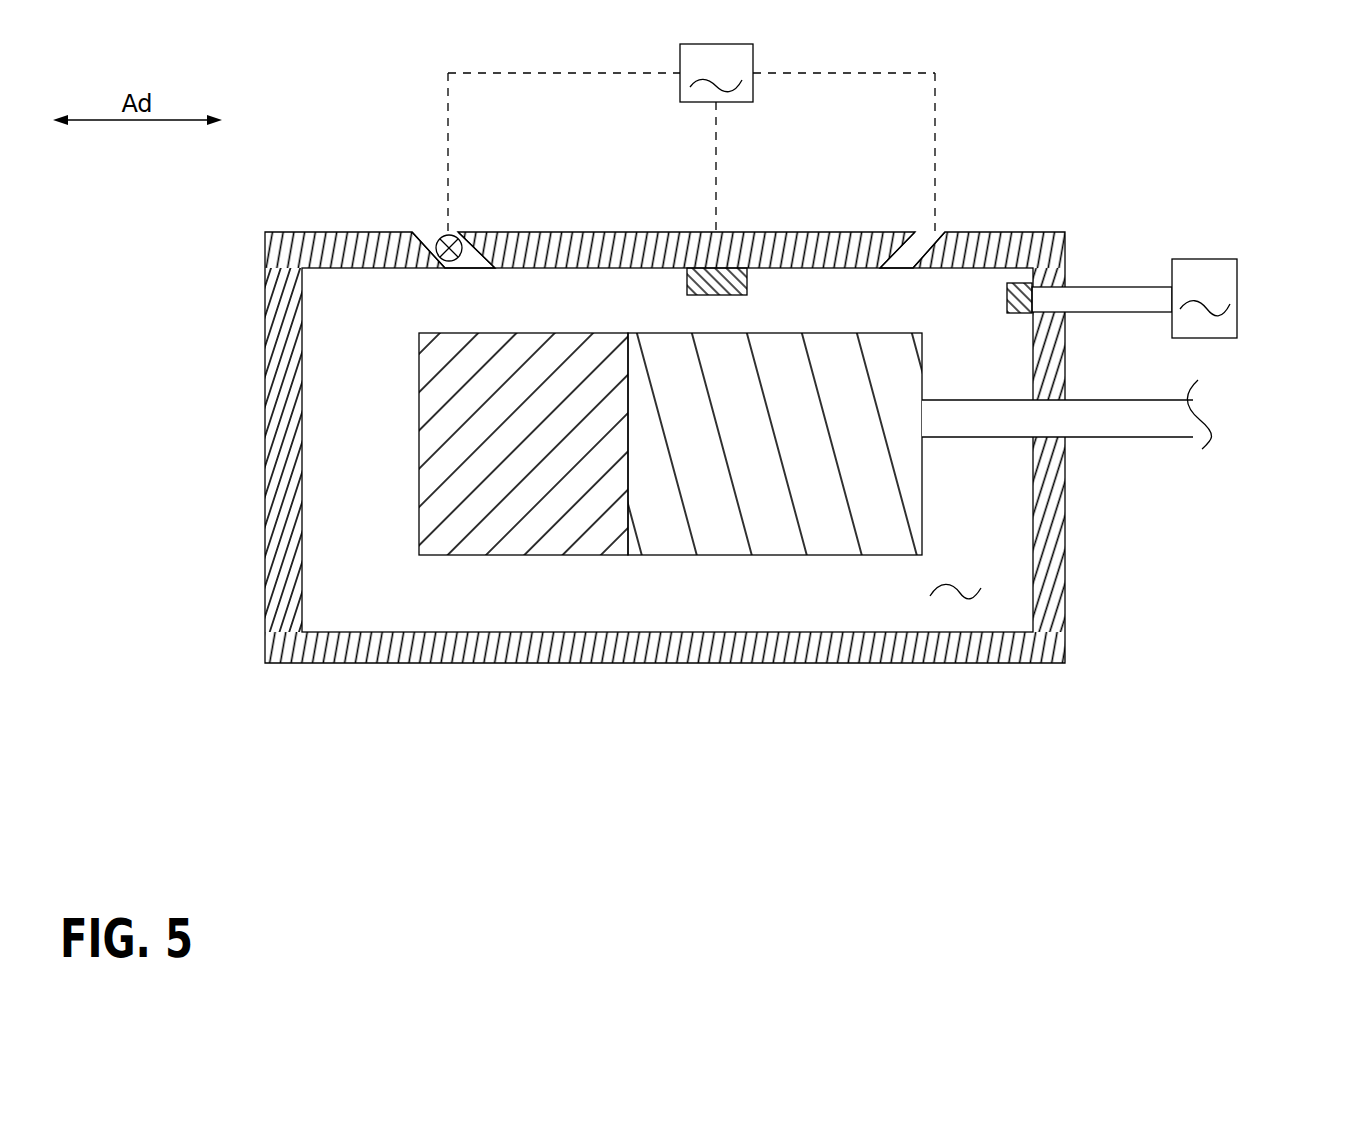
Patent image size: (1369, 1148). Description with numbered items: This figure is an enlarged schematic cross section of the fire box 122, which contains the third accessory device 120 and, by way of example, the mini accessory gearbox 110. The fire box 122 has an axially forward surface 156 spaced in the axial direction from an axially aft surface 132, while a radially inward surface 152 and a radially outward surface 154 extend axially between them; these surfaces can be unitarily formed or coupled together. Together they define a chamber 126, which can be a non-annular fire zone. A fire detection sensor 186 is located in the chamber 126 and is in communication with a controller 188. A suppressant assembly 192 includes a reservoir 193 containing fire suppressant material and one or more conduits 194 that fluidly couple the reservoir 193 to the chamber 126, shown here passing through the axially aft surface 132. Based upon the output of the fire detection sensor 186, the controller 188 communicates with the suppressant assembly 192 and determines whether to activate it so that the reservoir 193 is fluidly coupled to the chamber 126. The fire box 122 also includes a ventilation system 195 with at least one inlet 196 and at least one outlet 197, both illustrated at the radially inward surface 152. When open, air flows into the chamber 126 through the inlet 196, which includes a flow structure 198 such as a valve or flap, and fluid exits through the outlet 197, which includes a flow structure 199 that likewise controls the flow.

The mini accessory gearbox 110 is at (777, 555).
The third accessory device 120 is at (505, 555).
The fire box 122 is at (637, 453).
The chamber 126 is at (953, 598).
The axially aft surface 132 is at (1050, 367).
The radially inward surface 152 is at (622, 255).
The radially outward surface 154 is at (613, 635).
The axially forward surface 156 is at (290, 373).
The fire detection sensor 186 is at (750, 286).
The controller 188 is at (716, 73).
The suppressant assembly 192 is at (1261, 298).
The reservoir 193 is at (1257, 304).
The conduits 194 is at (1113, 285).
The ventilation system 195 is at (691, 138).
The inlet 196 is at (415, 233).
The outlet 197 is at (938, 232).
The flow structure 198 is at (440, 236).
The flow structure 199 is at (950, 233).